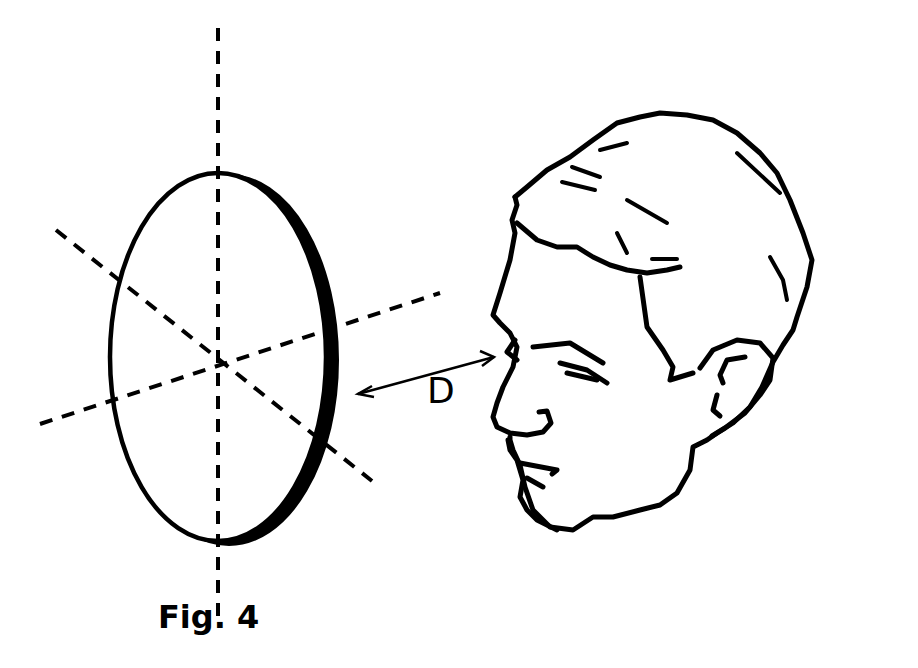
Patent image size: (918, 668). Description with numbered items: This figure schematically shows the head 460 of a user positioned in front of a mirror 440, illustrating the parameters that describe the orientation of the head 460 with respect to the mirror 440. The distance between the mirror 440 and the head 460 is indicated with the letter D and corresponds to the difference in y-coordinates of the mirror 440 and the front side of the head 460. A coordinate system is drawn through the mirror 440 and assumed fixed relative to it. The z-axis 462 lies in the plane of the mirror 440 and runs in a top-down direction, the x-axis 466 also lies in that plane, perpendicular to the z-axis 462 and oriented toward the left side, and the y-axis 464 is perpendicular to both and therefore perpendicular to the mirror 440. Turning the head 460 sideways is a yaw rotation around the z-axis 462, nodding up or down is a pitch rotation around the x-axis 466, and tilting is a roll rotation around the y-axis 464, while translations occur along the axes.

The mirror 440 is at (250, 226).
The head 460 is at (498, 142).
The z-axis 462 is at (212, 41).
The y-axis 464 is at (417, 294).
The x-axis 466 is at (353, 481).